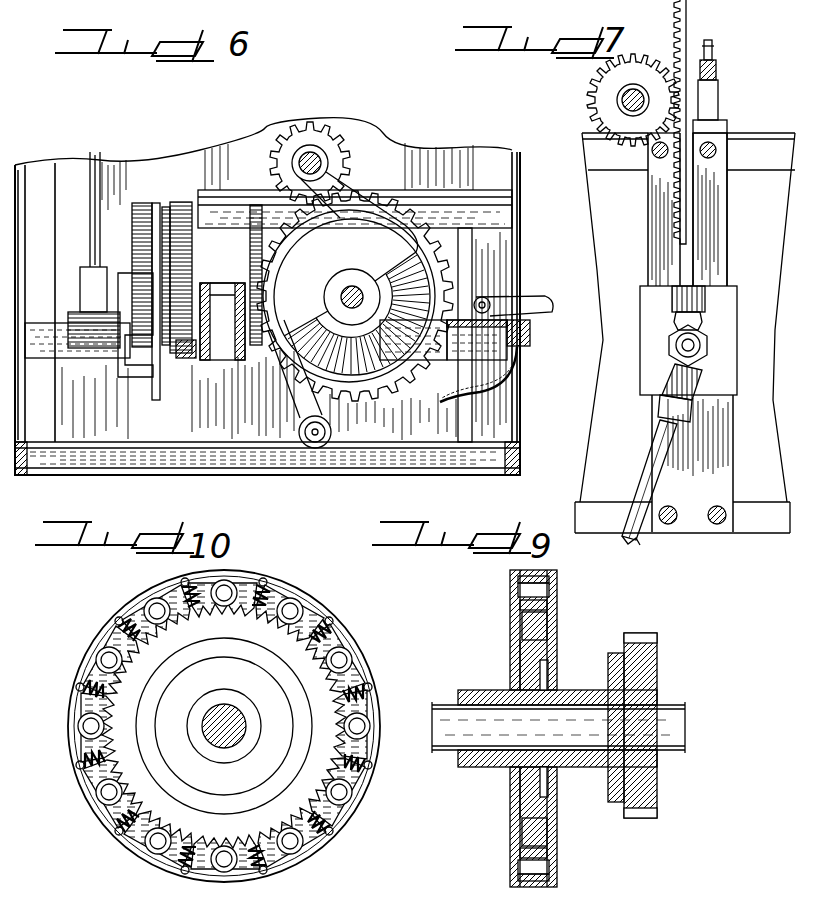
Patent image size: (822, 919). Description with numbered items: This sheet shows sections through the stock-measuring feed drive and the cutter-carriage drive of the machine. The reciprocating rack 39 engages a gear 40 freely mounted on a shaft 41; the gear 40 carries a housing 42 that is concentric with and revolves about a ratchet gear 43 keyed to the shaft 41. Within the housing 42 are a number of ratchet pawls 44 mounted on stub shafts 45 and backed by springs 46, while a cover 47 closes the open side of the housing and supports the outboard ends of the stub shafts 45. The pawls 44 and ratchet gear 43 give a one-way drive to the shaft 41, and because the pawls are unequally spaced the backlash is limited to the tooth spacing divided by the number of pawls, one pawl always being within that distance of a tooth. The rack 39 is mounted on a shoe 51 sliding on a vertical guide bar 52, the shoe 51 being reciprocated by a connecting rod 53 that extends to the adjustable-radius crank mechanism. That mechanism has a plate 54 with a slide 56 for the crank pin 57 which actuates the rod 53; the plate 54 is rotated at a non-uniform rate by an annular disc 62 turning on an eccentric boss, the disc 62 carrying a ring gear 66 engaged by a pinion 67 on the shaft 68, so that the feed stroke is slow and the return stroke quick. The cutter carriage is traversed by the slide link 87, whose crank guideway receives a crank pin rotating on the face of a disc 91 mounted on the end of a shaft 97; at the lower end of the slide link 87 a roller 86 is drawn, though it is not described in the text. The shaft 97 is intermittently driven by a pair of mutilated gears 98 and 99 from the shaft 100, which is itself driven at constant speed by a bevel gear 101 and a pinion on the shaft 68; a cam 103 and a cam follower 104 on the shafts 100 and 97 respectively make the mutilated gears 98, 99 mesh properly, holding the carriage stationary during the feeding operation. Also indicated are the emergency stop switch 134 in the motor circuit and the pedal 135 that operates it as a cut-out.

In FIG. 7, the reciprocating rack 39 is at (695, 22).
In FIG. 7, the gear 40 is at (590, 98).
In FIG. 9, the gear 40 is at (645, 665).
In FIG. 7, the shaft 41 is at (635, 95).
In FIG. 10, the shaft 41 is at (232, 738).
In FIG. 9, the shaft 41 is at (665, 735).
In FIG. 10, the housing 42 is at (345, 688).
In FIG. 9, the housing 42 is at (553, 640).
In FIG. 10, the ratchet gear 43 is at (280, 645).
In FIG. 9, the ratchet gear 43 is at (528, 625).
In FIG. 10, the ratchet pawls 44 is at (300, 612).
In FIG. 9, the ratchet pawls 44 is at (518, 605).
In FIG. 10, the stub shafts 45 is at (290, 608).
In FIG. 9, the stub shafts 45 is at (518, 590).
In FIG. 10, the springs 46 is at (312, 640).
In FIG. 9, the cover 47 is at (518, 648).
In FIG. 7, the shoe 51 is at (738, 300).
In FIG. 7, the vertical guide bar 52 is at (722, 232).
In FIG. 6, the connecting rod 53 is at (95, 152).
In FIG. 7, the connecting rod 53 is at (657, 447).
In FIG. 6, the plate 54 is at (140, 203).
In FIG. 6, the slide 56 is at (135, 345).
In FIG. 6, the crank pin 57 is at (70, 312).
In FIG. 6, the annular disc 62 is at (166, 207).
In FIG. 6, the ring gear 66 is at (183, 202).
In FIG. 6, the pinion 67 is at (185, 315).
In FIG. 6, the shaft 68 is at (232, 300).
In FIG. 6, the roller 86 is at (318, 448).
In FIG. 6, the slide link 87 is at (290, 396).
In FIG. 6, the crank pin disc 91 is at (388, 142).
In FIG. 6, the shaft 97 is at (309, 160).
In FIG. 6, the mutilated gear 98 is at (295, 140).
In FIG. 6, the mutilated gear 99 is at (372, 382).
In FIG. 6, the shaft 100 is at (340, 296).
In FIG. 6, the bevel gear 101 is at (405, 347).
In FIG. 6, the cam 103 is at (349, 296).
In FIG. 6, the cam follower 104 is at (355, 195).
In FIG. 6, the emergency stop switch 134 is at (530, 338).
In FIG. 6, the pedal 135 is at (575, 290).